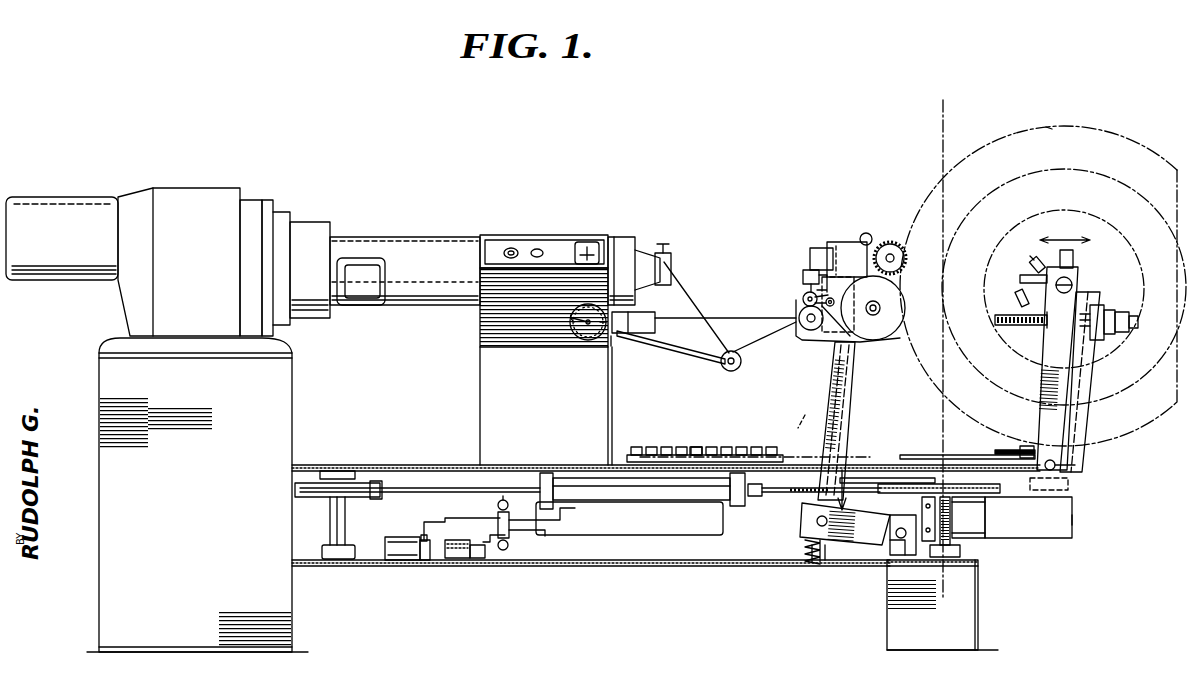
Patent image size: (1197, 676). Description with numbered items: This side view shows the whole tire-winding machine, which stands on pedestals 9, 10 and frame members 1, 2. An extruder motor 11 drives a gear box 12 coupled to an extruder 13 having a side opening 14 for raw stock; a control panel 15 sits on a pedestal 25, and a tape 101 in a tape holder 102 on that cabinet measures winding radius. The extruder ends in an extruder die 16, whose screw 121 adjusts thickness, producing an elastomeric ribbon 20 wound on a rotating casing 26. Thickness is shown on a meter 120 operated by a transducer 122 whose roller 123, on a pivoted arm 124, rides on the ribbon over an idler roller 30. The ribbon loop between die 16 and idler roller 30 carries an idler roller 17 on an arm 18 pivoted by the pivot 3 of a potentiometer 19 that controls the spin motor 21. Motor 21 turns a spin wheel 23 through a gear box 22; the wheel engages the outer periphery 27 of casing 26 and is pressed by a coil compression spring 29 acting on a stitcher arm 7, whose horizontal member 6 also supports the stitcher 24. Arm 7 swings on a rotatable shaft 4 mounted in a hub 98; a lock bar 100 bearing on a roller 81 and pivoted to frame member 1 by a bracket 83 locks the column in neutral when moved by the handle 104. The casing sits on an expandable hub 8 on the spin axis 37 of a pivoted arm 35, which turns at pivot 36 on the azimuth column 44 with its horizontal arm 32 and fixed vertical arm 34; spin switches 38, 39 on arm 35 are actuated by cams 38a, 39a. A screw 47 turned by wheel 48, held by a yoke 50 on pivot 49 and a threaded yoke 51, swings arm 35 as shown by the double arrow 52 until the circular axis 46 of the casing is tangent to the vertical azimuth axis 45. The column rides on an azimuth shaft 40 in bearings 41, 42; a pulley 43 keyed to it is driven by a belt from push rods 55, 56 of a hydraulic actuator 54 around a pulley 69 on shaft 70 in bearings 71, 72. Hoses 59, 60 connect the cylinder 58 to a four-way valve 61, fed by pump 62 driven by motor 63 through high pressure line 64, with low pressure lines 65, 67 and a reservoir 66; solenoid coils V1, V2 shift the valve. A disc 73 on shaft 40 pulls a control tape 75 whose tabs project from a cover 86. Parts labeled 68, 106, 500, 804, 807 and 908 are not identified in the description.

The frame member 1 is at (604, 568).
The frame member 2 is at (440, 466).
The pivot 3 is at (588, 336).
The rotatable shaft 4 is at (896, 542).
The horizontal member 6 is at (852, 548).
The stitcher arm 7 is at (842, 469).
The expandable hub 8 is at (1102, 222).
The pedestal 9 is at (197, 502).
The pedestal 10 is at (976, 622).
The extruder motor 11 is at (56, 206).
The gear box 12 is at (193, 199).
The extruder 13 is at (422, 246).
The side opening 14 is at (362, 274).
The control panel 15 is at (496, 250).
The extruder die 16 is at (654, 256).
The idler roller 17 is at (729, 370).
The arm 18 is at (664, 340).
The potentiometer 19 is at (604, 335).
The elastomeric ribbon 20 is at (690, 304).
The spin motor 21 is at (802, 298).
The gear box 22 is at (846, 242).
The spin wheel 23 is at (896, 300).
The stitcher 24 is at (833, 248).
The pedestal 25 is at (546, 406).
The casing 26 is at (1055, 112).
The outer periphery 27 is at (1110, 136).
The coil compression spring 29 is at (802, 548).
The idler roller 30 is at (800, 330).
The horizontal arm 32 is at (1056, 538).
The fixed vertical arm 34 is at (1084, 420).
The adjustable pivoted arm 35 is at (1050, 346).
The pivot 36 is at (1074, 466).
The spin axis 37 is at (1074, 286).
The spin switch 38 is at (1074, 262).
The cam 38a is at (1031, 256).
The spin switch 39 is at (1032, 266).
The cam 39a is at (1020, 280).
The azimuth shaft 40 is at (958, 527).
The bearing 41 is at (922, 466).
The bearing 42 is at (960, 550).
The pulley 43 is at (884, 476).
The azimuth column 44 is at (1078, 524).
The vertical azimuth axis 45 is at (952, 116).
The circular axis 46 is at (1049, 166).
The screw 47 is at (1020, 312).
The manually rotated wheel 48 is at (1126, 334).
The pivot 49 is at (1098, 310).
The pivoted yoke 50 is at (1106, 336).
The pivoted and threaded yoke 51 is at (1012, 332).
The double arrow 52 is at (1070, 240).
The hydraulic actuator 54 is at (624, 502).
The push rod 55 is at (480, 493).
The push rod 56 is at (762, 488).
The cylinder 58 is at (664, 502).
The high pressure flexible hose 59 is at (624, 538).
The high pressure flexible hose 60 is at (576, 522).
The solenoid operated four-way valve 61 is at (544, 538).
The pump 62 is at (422, 564).
The electric motor 63 is at (388, 544).
The high pressure line 64 is at (426, 524).
The low pressure line 65 is at (446, 562).
The reservoir 66 is at (460, 559).
The low pressure line 67 is at (484, 548).
The rod 68 is at (876, 490).
The pulley 69 is at (302, 500).
The shaft 70 is at (330, 538).
The bearing 71 is at (334, 472).
The bearing 72 is at (336, 560).
The disc 73 is at (982, 454).
The control tape 75 is at (804, 454).
The roller 81 is at (708, 454).
The bracket 83 is at (814, 562).
The cover 86 is at (657, 451).
The hub 98 is at (886, 518).
The lock bar 100 is at (846, 404).
The tape 101 is at (740, 318).
The tape holder 102 is at (631, 313).
The handle 104 is at (867, 238).
The link 106 is at (617, 336).
The meter 120 is at (585, 242).
The screw 121 is at (668, 255).
The transducer 122 is at (810, 266).
The roller 123 is at (802, 274).
The pivoted arm 124 is at (836, 310).
The line 500 is at (812, 390).
The knob 804 is at (511, 248).
The knob 807 is at (537, 249).
The pointer 908 is at (573, 328).
The solenoid coil V1 is at (504, 494).
The solenoid coil V2 is at (508, 548).